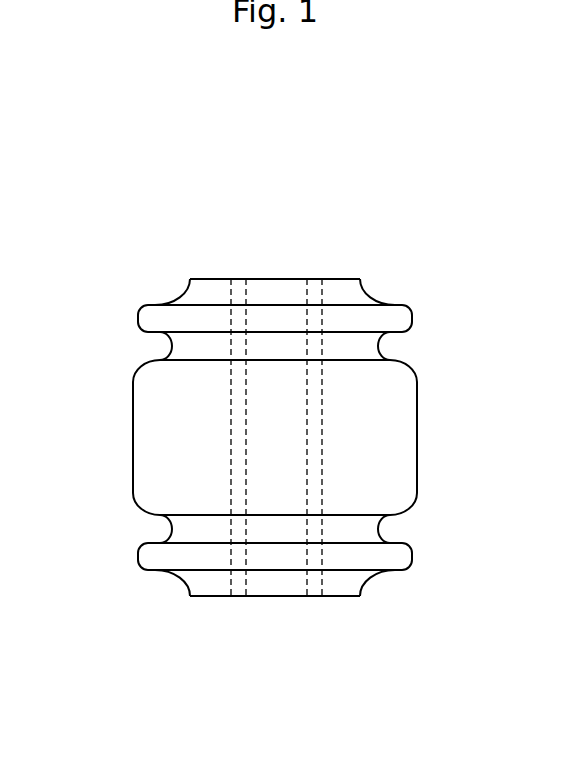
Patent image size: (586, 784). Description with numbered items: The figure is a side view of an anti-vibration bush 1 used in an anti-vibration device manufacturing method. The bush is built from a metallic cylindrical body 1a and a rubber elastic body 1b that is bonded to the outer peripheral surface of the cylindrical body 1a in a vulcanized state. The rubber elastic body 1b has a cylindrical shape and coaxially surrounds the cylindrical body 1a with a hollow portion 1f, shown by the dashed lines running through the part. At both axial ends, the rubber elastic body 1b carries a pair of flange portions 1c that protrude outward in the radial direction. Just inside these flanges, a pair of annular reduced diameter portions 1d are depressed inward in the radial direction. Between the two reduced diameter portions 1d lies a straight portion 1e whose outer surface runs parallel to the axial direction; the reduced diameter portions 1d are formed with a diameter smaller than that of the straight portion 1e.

The anti-vibration bush 1 is at (283, 164).
The cylindrical body 1a is at (231, 578).
The rubber elastic body 1b is at (130, 408).
The flange portions 1c is at (406, 317).
The reduced diameter portions 1d is at (383, 346).
The straight portion 1e is at (413, 428).
The hollow portion 1f is at (306, 558).